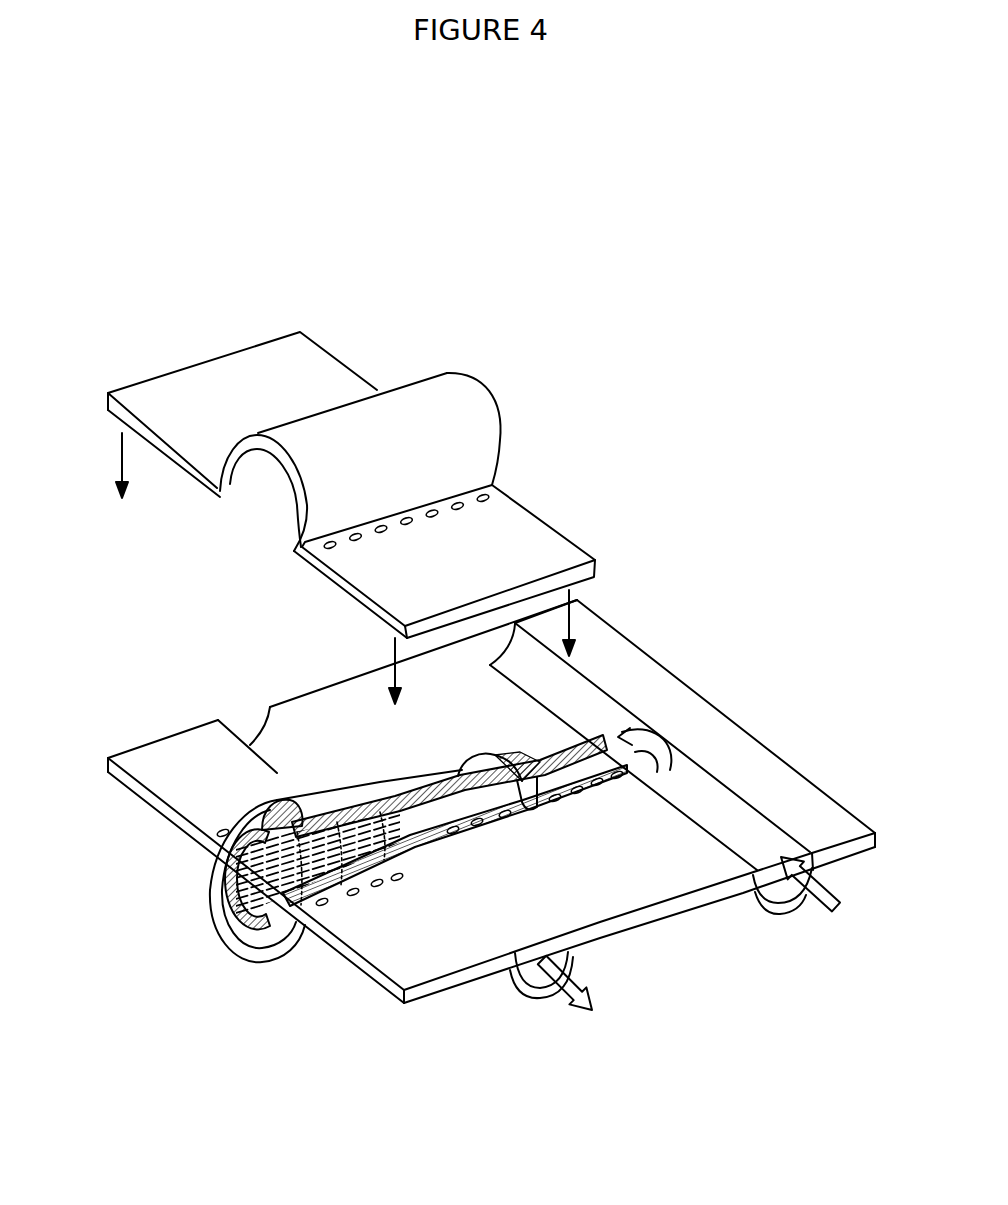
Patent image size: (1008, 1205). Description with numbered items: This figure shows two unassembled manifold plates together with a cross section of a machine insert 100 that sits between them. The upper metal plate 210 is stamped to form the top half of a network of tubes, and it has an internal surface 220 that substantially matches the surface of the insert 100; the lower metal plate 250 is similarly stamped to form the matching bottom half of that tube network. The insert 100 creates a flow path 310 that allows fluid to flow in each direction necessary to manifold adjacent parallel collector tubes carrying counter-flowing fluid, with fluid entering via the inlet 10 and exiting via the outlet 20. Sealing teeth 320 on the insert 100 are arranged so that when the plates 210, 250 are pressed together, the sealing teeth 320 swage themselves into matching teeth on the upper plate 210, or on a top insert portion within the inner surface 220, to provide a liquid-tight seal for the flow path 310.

The inlet 10 is at (823, 902).
The outlet 20 is at (584, 993).
The machine insert 100 is at (266, 883).
The upper metal plate 210 is at (548, 513).
The internal surface 220 is at (237, 488).
The lower metal plate 250 is at (765, 722).
The flow path 310 is at (453, 845).
The sealing teeth 320 is at (280, 813).